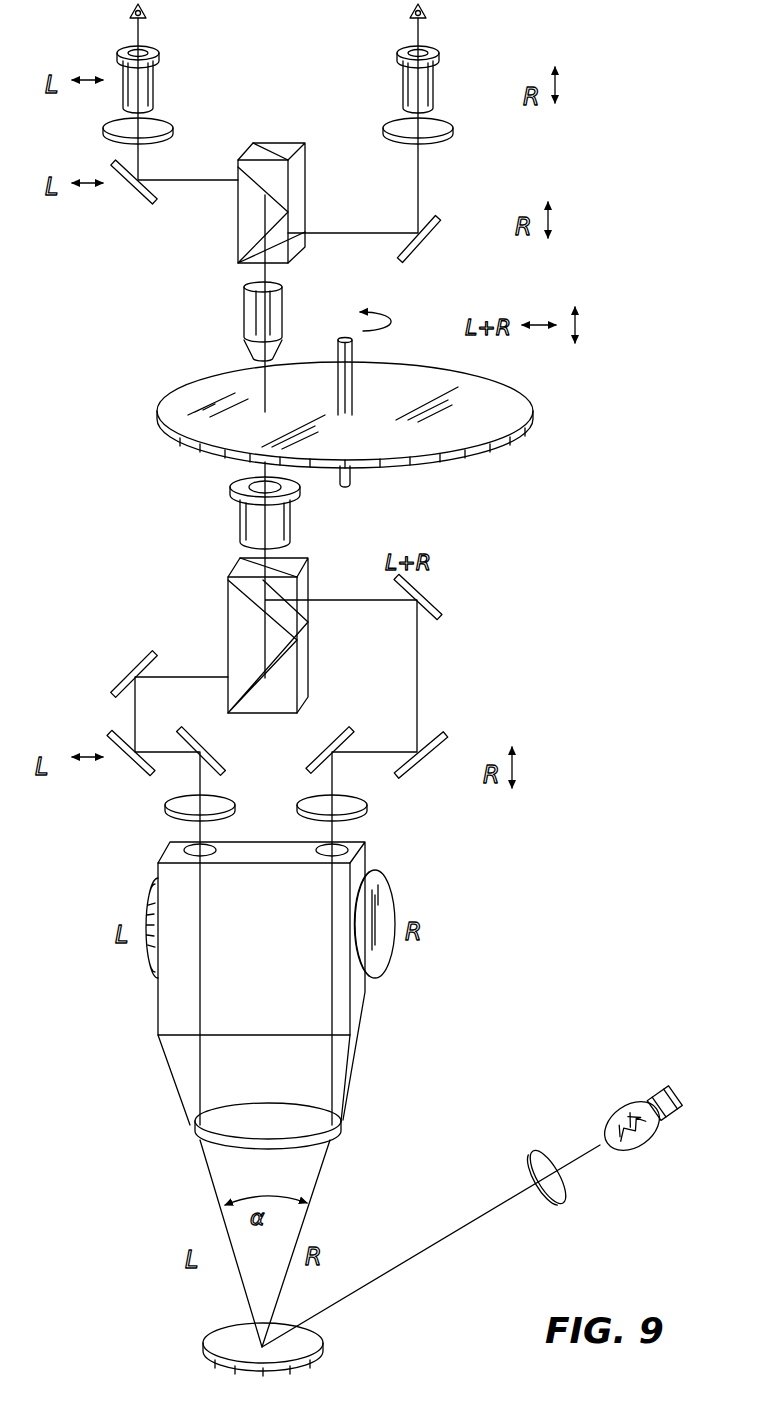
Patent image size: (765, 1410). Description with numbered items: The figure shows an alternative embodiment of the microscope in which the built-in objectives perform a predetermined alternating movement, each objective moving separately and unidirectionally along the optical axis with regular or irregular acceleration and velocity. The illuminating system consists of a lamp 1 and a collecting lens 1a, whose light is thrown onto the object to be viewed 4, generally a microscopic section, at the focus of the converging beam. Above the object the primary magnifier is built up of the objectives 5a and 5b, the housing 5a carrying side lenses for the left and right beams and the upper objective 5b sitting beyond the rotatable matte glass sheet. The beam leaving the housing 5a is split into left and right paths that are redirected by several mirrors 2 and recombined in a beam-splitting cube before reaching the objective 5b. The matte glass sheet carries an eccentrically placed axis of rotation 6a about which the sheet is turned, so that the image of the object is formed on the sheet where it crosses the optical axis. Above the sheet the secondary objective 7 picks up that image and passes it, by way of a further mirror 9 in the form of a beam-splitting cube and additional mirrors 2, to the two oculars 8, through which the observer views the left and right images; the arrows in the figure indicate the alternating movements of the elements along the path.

The lamp 1 is at (660, 1147).
The collecting lens 1a is at (566, 1197).
The mirror 2 is at (149, 203).
The object to be viewed 4 is at (308, 1347).
The primary magnifier objective 5a is at (355, 1008).
The primary magnifier objective 5b is at (248, 528).
The axis of rotation 6a is at (355, 342).
The secondary objective 7 is at (252, 320).
The ocular 8 is at (155, 85).
The mirror 9 is at (236, 238).